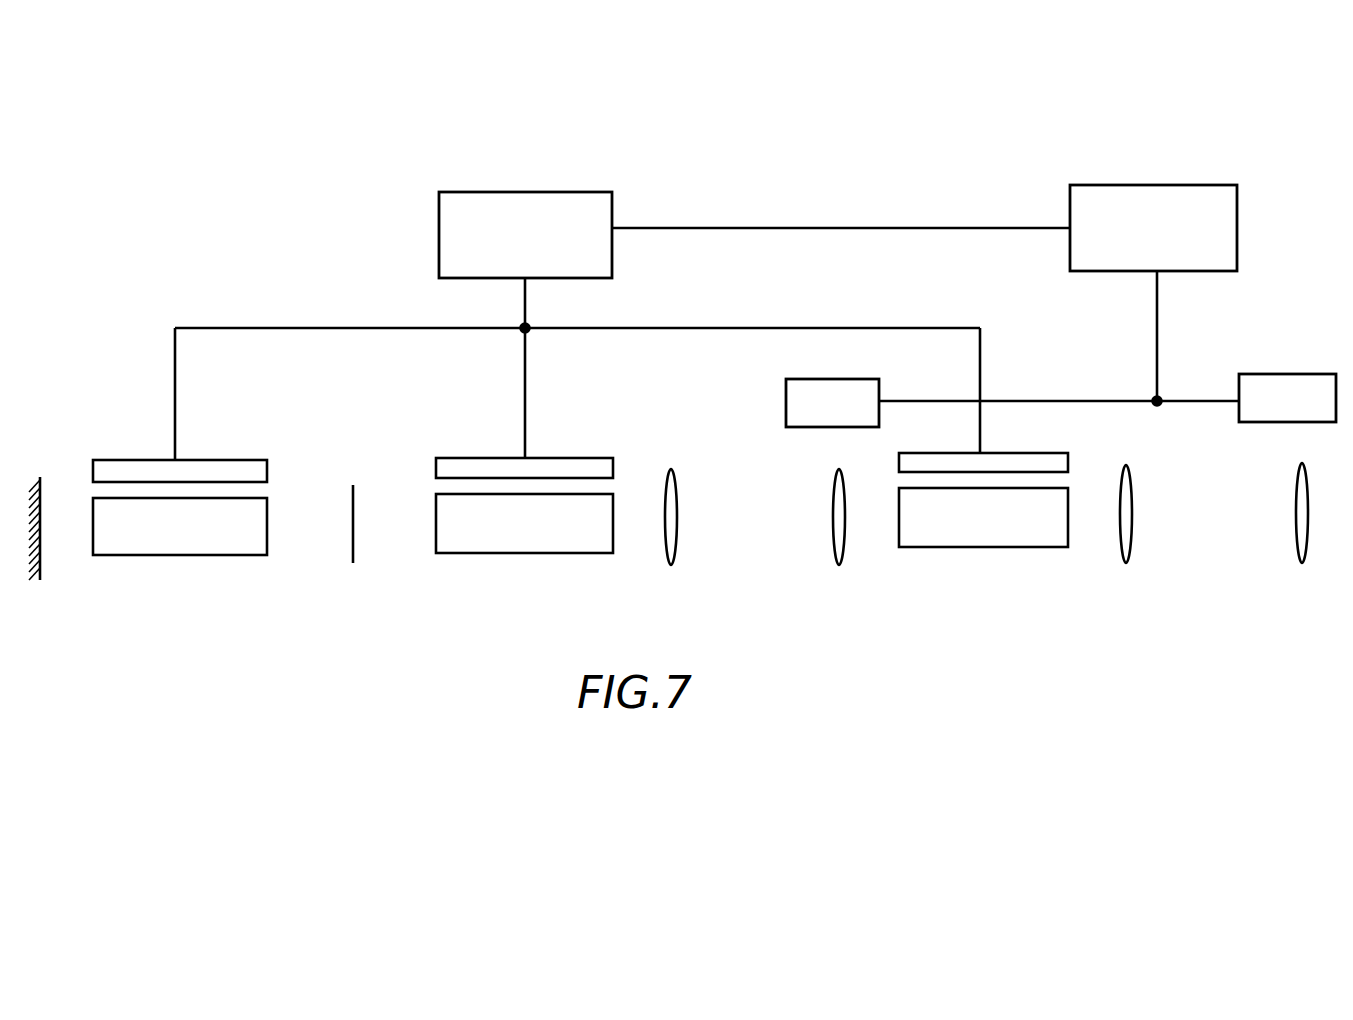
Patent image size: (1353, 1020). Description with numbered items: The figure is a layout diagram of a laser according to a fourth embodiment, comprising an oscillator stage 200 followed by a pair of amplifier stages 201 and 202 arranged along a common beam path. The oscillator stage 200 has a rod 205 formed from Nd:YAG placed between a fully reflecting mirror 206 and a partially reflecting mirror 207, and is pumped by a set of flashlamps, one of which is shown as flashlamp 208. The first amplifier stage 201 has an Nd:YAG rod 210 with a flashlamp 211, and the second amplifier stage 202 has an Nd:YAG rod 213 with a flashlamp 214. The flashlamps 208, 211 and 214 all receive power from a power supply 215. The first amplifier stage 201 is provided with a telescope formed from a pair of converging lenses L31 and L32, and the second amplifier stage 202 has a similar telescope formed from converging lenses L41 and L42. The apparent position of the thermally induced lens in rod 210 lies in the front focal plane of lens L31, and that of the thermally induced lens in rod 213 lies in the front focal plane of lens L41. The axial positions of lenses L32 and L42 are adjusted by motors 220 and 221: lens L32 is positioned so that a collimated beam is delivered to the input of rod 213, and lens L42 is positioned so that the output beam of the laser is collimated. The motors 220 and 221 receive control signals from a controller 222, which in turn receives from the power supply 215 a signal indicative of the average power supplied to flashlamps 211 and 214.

The oscillator stage 200 is at (180, 551).
The first amplifier stage 201 is at (520, 552).
The second amplifier stage 202 is at (1002, 546).
The rod 205 is at (234, 533).
The fully reflecting mirror 206 is at (42, 551).
The partially reflecting mirror 207 is at (352, 545).
The flashlamp 208 is at (204, 468).
The rod 210 is at (563, 532).
The flashlamp 211 is at (548, 466).
The rod 213 is at (1028, 524).
The flashlamp 214 is at (1053, 463).
The power supply 215 is at (488, 191).
The motor 220 is at (844, 379).
The motor 221 is at (1298, 374).
The controller 222 is at (1165, 185).
The converging lens L31 is at (674, 545).
The converging lens L32 is at (842, 540).
The converging lens L41 is at (1128, 540).
The converging lens L42 is at (1303, 540).